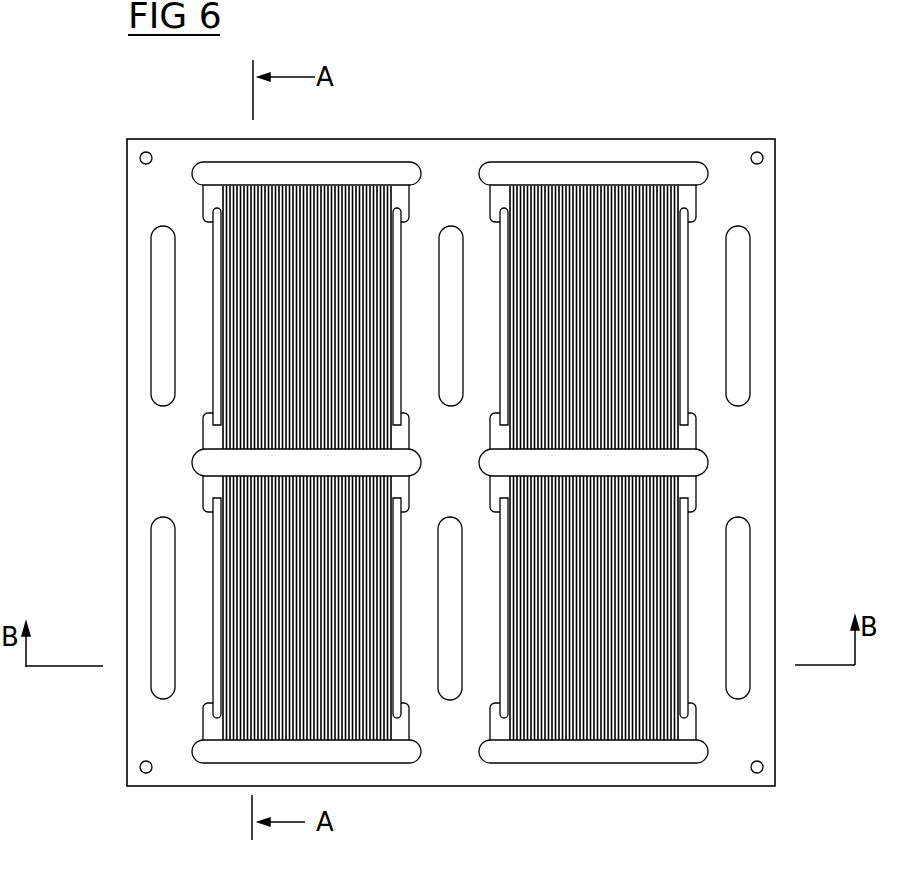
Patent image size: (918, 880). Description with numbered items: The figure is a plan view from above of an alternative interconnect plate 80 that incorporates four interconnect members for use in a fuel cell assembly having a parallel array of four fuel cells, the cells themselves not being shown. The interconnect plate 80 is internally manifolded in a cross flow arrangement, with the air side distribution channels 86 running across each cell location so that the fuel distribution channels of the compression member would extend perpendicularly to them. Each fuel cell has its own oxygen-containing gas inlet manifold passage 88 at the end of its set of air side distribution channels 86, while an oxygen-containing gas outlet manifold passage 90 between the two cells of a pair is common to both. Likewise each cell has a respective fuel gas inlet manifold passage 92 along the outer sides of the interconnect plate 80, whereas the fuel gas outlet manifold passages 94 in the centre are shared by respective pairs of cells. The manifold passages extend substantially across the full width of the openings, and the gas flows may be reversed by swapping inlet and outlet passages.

The interconnect plate 80 is at (127, 177).
The air side distribution channels 86 is at (250, 258).
The oxygen-containing gas inlet manifold passage 88 is at (241, 173).
The oxygen-containing gas outlet manifold passage 90 is at (210, 463).
The fuel gas inlet manifold passage 92 is at (163, 293).
The fuel gas outlet manifold passage 94 is at (448, 245).